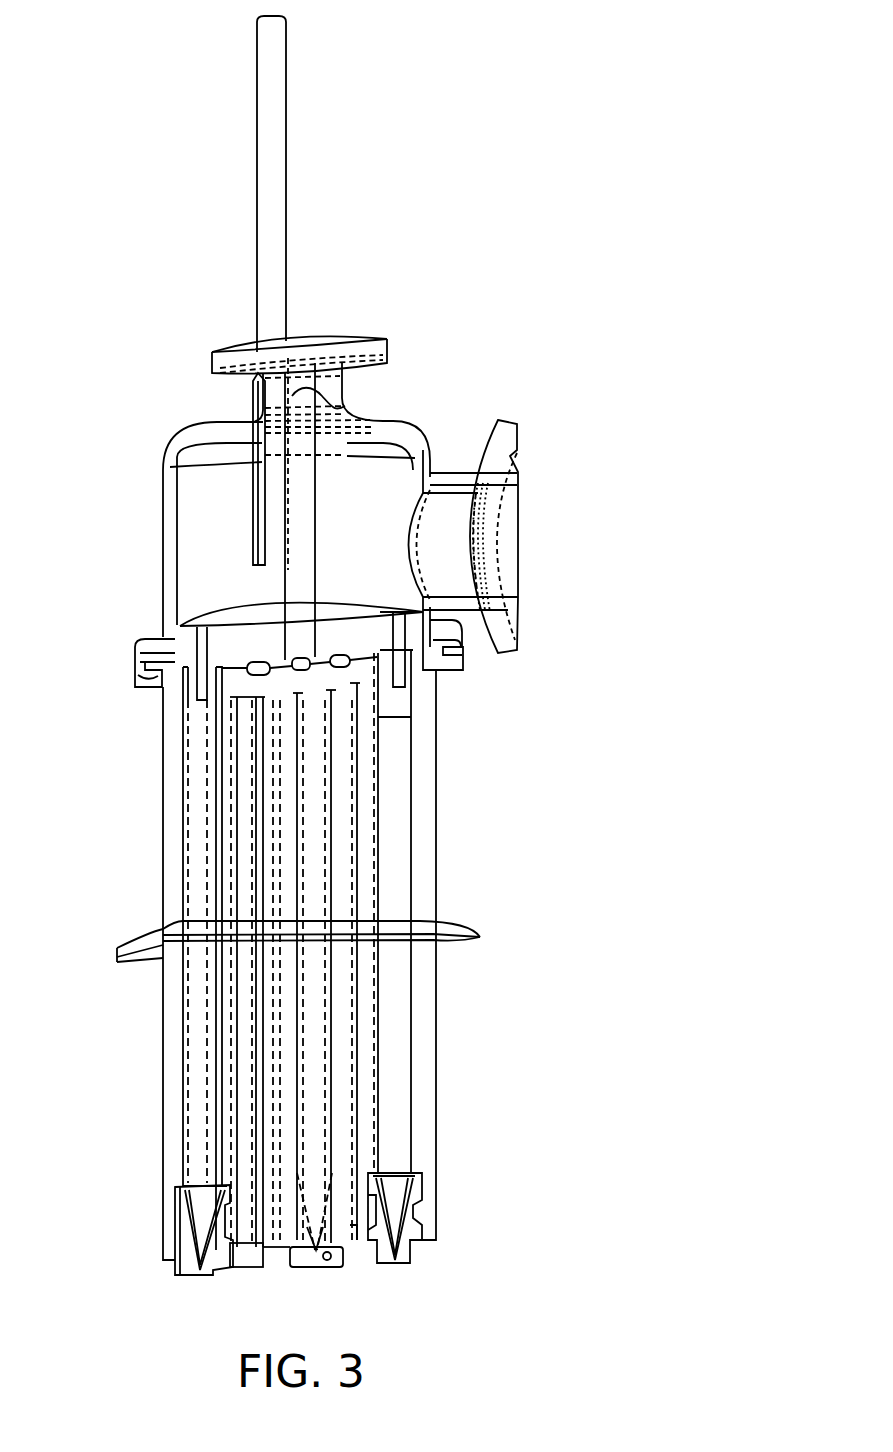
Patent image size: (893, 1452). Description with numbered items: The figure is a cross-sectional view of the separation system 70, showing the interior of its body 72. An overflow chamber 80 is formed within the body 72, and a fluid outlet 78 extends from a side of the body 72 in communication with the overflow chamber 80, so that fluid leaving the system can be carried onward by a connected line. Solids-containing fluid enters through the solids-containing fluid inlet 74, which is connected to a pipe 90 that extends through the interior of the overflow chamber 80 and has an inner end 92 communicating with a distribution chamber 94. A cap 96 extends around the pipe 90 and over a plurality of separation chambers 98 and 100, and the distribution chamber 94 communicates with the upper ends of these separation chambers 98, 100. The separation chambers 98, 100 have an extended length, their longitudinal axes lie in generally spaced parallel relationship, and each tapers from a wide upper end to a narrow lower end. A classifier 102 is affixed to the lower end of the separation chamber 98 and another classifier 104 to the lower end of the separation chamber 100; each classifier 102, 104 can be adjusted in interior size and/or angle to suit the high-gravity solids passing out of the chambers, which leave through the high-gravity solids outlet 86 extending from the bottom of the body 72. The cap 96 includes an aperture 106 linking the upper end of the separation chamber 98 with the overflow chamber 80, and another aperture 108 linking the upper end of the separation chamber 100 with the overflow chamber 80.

The separation system 70 is at (435, 398).
The body 72 is at (440, 828).
The solids-containing fluid inlet 74 is at (318, 338).
The fluid outlet 78 is at (507, 530).
The overflow chamber 80 is at (192, 530).
The high-gravity solids outlet 86 is at (212, 1277).
The pipe 90 is at (307, 537).
The inner end 92 is at (303, 672).
The distribution chamber 94 is at (290, 676).
The cap 96 is at (203, 622).
The separation chamber 98 is at (188, 826).
The separation chamber 100 is at (403, 787).
The classifier 102 is at (176, 1259).
The classifier 104 is at (422, 1247).
The aperture 106 is at (192, 651).
The aperture 108 is at (397, 670).